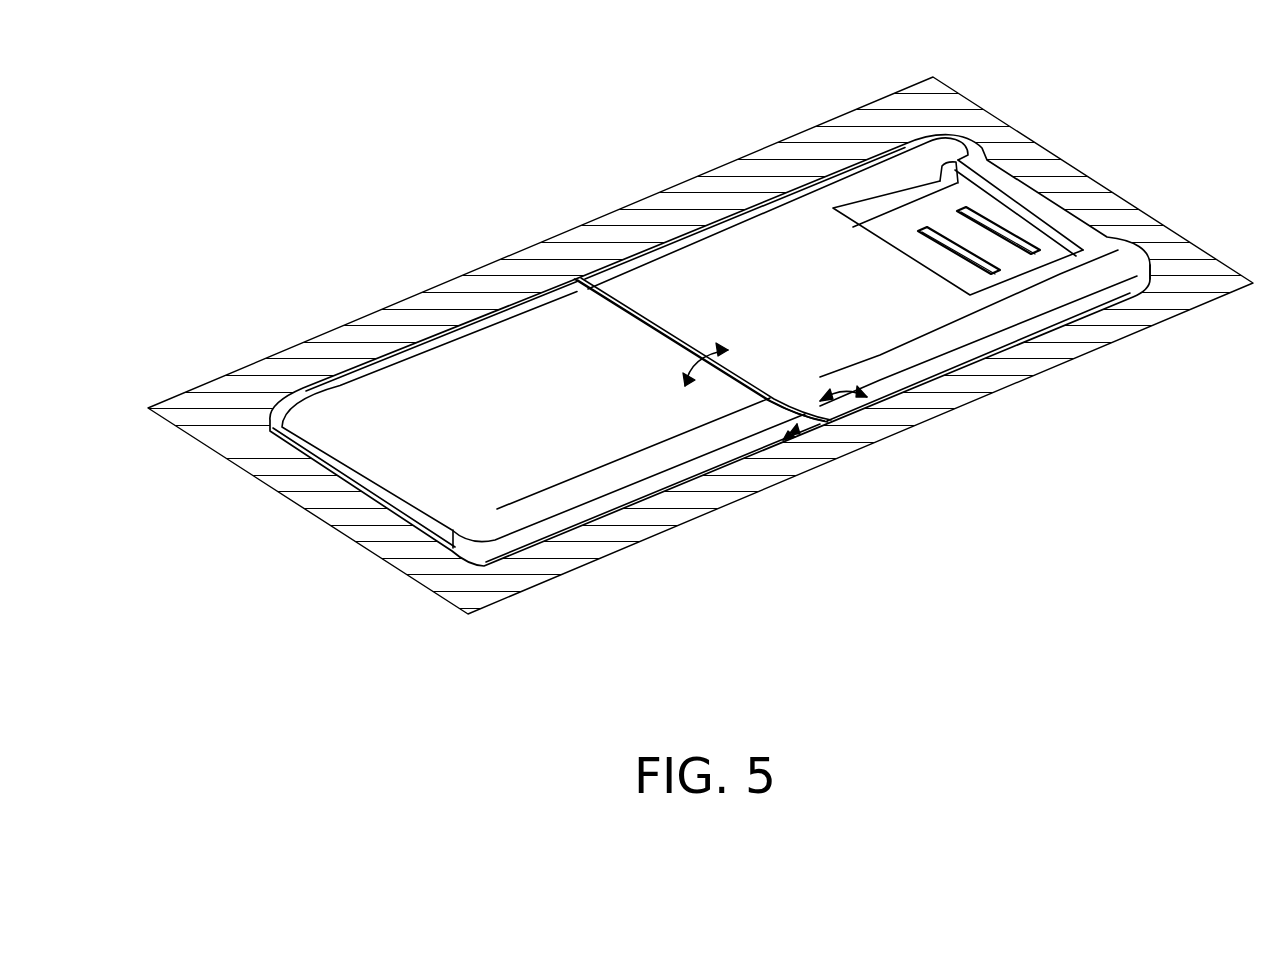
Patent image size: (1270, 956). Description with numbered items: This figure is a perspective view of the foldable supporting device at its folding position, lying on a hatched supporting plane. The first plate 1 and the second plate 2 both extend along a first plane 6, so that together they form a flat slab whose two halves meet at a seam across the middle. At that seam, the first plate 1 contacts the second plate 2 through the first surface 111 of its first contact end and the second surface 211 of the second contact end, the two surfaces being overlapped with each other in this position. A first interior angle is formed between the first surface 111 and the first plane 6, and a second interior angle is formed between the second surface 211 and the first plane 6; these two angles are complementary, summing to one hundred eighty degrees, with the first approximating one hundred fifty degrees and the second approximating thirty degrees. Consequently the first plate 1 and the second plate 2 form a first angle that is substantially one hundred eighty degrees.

The first plate 1 is at (744, 242).
The second plate 2 is at (507, 357).
The first plane 6 is at (250, 388).
The first surface 111 is at (825, 420).
The second surface 211 is at (773, 430).